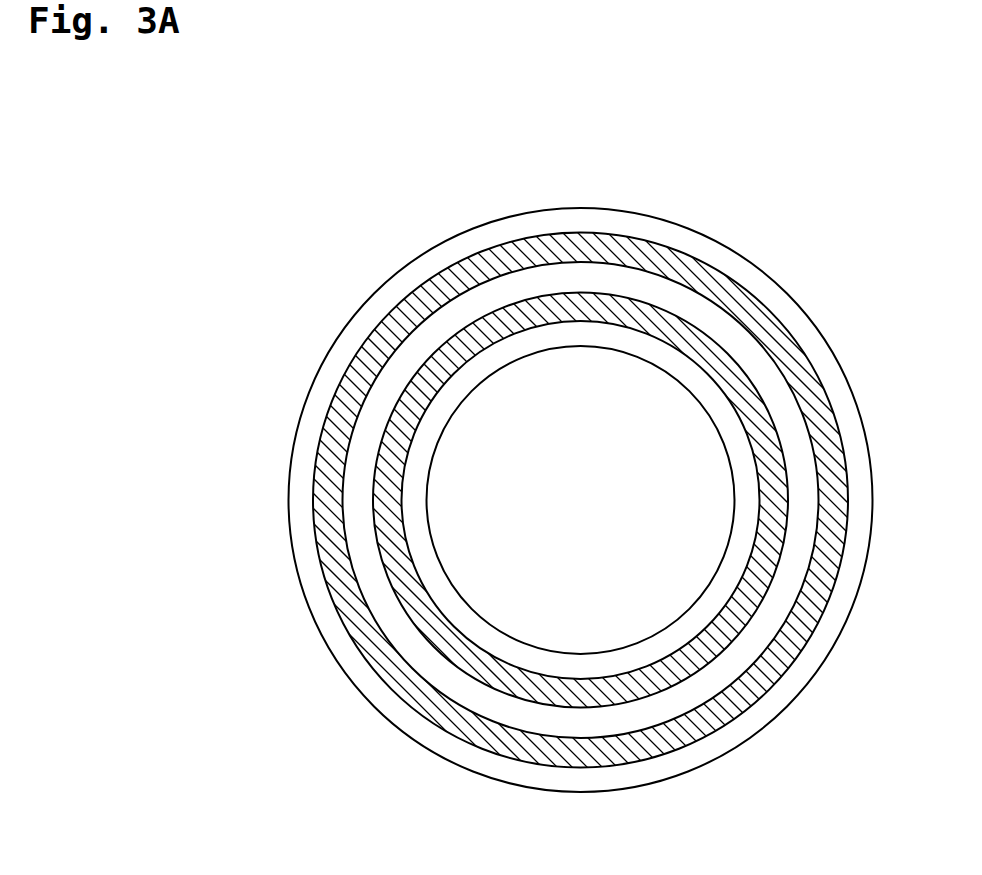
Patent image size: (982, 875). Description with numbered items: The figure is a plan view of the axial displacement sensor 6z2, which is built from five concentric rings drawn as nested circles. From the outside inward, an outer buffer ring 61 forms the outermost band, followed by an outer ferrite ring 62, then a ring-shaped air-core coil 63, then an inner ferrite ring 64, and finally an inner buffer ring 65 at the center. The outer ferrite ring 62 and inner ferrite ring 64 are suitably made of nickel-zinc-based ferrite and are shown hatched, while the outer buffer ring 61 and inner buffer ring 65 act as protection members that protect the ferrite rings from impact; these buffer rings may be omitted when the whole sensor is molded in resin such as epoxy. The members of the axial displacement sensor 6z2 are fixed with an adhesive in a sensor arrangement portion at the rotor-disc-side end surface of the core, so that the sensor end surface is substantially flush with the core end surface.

The axial displacement sensor 6z2 is at (345, 302).
The outer buffer ring 61 is at (838, 603).
The outer ferrite ring 62 is at (785, 664).
The ring-shaped air-core coil 63 is at (570, 728).
The inner ferrite ring 64 is at (482, 677).
The inner buffer ring 65 is at (435, 592).